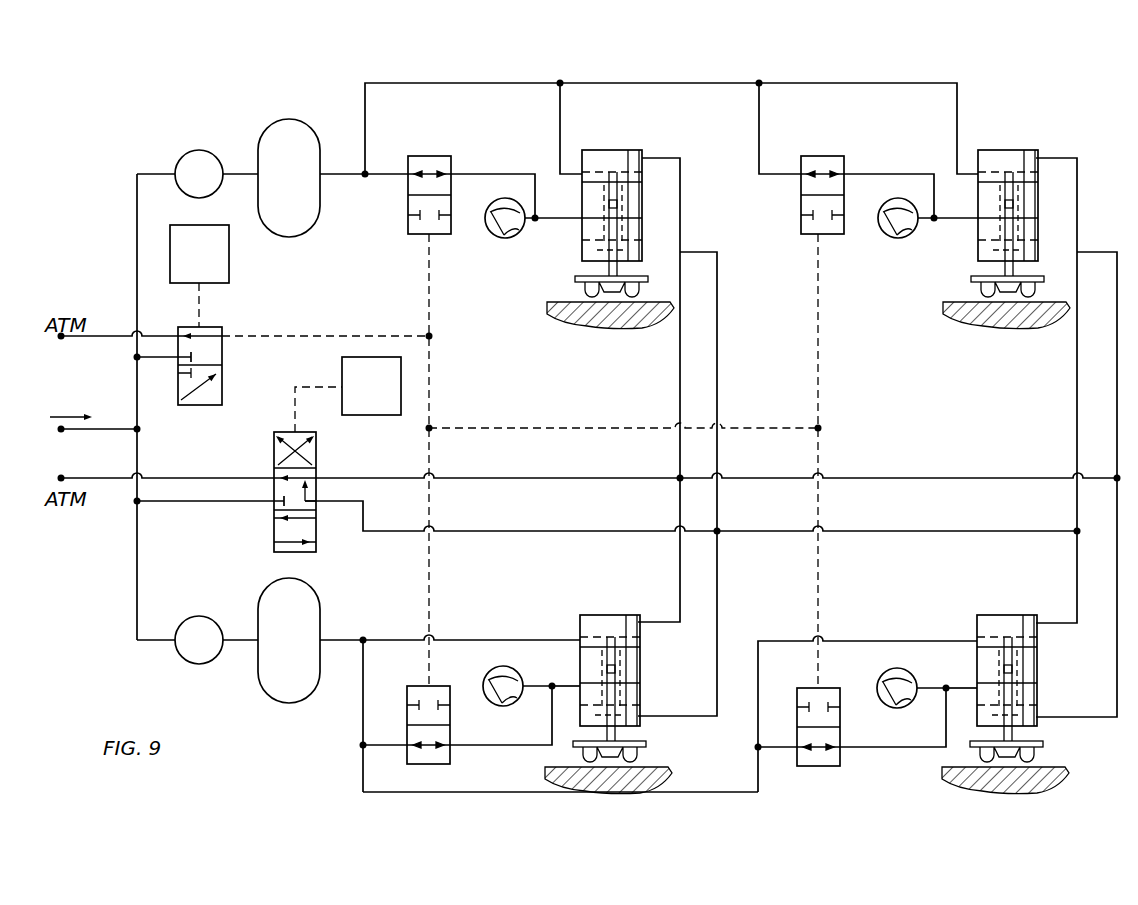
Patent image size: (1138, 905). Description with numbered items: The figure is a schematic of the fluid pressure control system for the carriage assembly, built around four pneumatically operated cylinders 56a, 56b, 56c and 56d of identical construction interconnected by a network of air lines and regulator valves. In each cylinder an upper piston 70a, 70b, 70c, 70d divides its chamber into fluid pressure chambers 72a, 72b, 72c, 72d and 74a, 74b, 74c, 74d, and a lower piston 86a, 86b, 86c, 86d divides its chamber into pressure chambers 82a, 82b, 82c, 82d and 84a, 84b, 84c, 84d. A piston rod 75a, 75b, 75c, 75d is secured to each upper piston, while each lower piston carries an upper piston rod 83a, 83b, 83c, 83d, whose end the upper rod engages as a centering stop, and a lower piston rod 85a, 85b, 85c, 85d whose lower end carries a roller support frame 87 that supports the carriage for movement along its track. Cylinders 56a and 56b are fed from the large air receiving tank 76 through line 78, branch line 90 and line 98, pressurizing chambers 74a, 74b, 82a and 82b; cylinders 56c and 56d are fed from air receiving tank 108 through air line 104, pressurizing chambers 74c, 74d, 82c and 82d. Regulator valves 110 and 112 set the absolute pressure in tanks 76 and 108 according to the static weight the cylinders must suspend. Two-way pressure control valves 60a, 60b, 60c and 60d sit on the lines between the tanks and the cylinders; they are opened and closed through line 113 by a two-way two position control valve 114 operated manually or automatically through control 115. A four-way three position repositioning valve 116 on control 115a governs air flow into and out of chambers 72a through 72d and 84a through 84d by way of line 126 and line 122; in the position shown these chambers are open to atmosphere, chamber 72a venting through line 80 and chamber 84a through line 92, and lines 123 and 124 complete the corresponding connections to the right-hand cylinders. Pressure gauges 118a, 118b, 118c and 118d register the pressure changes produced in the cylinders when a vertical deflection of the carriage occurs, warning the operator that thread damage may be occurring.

The cylinder 56a is at (628, 206).
The cylinder 56b is at (1019, 198).
The cylinder 56c is at (617, 652).
The cylinder 56d is at (1013, 651).
The two-way pressure control valve 60a is at (430, 156).
The two-way pressure control valve 60b is at (822, 156).
The two-way pressure control valve 60c is at (407, 692).
The two-way pressure control valve 60d is at (820, 688).
The upper piston 70a is at (650, 158).
The upper piston 70b is at (993, 168).
The upper piston 70c is at (588, 615).
The upper piston 70d is at (993, 630).
The fluid pressure chamber 72a is at (628, 160).
The fluid pressure chamber 72b is at (1015, 165).
The fluid pressure chamber 72c is at (622, 612).
The fluid pressure chamber 72d is at (1020, 625).
The fluid pressure chamber 74a is at (600, 183).
The fluid pressure chamber 74b is at (992, 186).
The fluid pressure chamber 74c is at (595, 650).
The fluid pressure chamber 74d is at (990, 650).
The piston rod 75a is at (646, 200).
The piston rod 75b is at (1040, 195).
The piston rod 75c is at (603, 645).
The piston rod 75d is at (1020, 660).
The air receiving tank 76 is at (290, 128).
The line 78 is at (430, 83).
The line 80 is at (680, 370).
The fluid pressure chamber 82a is at (640, 232).
The fluid pressure chamber 82b is at (1040, 235).
The fluid pressure chamber 82c is at (620, 690).
The fluid pressure chamber 82d is at (1022, 688).
The upper piston rod 83a is at (592, 230).
The upper piston rod 83b is at (993, 226).
The upper piston rod 83c is at (620, 700).
The upper piston rod 83d is at (1030, 700).
The pressure chamber 84a is at (652, 262).
The pressure chamber 84b is at (1040, 260).
The pressure chamber 84c is at (640, 735).
The pressure chamber 84d is at (1035, 735).
The lower piston rod 85a is at (645, 270).
The lower piston rod 85b is at (1040, 270).
The lower piston rod 85c is at (605, 716).
The lower piston rod 85d is at (1000, 718).
The lower piston 86a is at (596, 255).
The lower piston 86b is at (985, 258).
The lower piston 86c is at (640, 720).
The lower piston 86d is at (1040, 725).
The roller support frame 87 is at (590, 282).
The branch line 90 is at (487, 174).
The line 92 is at (717, 372).
The line 98 is at (900, 174).
The air line 104 is at (363, 778).
The air receiving tank 108 is at (305, 608).
The regulator valve 110 is at (201, 163).
The regulator valve 112 is at (200, 628).
The line 113 is at (356, 335).
The two-way two position control valve 114 is at (215, 327).
The control 115 is at (217, 250).
The control 115a is at (369, 395).
The repositioning valve 116 is at (274, 452).
The pressure gauge 118a is at (505, 238).
The pressure gauge 118b is at (898, 238).
The pressure gauge 118c is at (503, 706).
The pressure gauge 118d is at (897, 708).
The line 122 is at (567, 531).
The connecting line 123 is at (1077, 392).
The connecting line 124 is at (1117, 398).
The line 126 is at (488, 479).